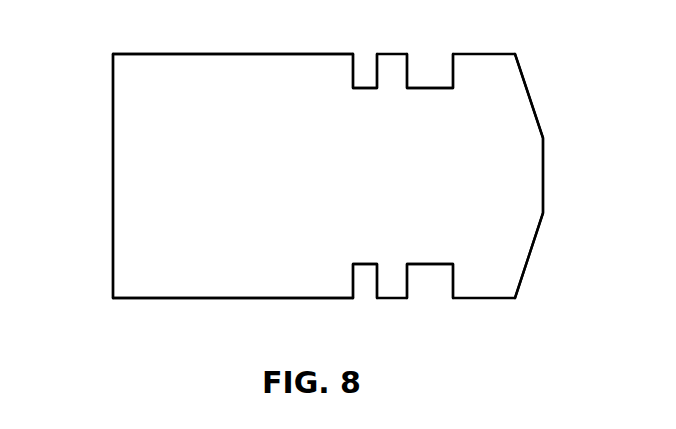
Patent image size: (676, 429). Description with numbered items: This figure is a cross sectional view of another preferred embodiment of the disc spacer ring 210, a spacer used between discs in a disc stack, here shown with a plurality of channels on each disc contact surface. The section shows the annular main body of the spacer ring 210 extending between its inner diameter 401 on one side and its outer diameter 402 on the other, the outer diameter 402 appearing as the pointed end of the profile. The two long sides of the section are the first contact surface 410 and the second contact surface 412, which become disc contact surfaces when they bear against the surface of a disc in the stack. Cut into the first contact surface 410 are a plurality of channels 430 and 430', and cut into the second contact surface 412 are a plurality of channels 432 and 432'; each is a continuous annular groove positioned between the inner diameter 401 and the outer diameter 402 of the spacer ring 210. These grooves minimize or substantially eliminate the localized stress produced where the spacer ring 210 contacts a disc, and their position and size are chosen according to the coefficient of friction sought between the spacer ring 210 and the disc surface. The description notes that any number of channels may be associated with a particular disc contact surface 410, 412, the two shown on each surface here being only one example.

The disc spacer ring 210 is at (120, 100).
The inner diameter 401 is at (113, 203).
The outer diameter 402 is at (543, 186).
The first contact surface 410 is at (244, 54).
The second contact surface 412 is at (218, 298).
The first annular channel 430 is at (372, 53).
The additional channel 430' is at (441, 53).
The second annular channel 432 is at (376, 301).
The additional channel 432' is at (440, 301).